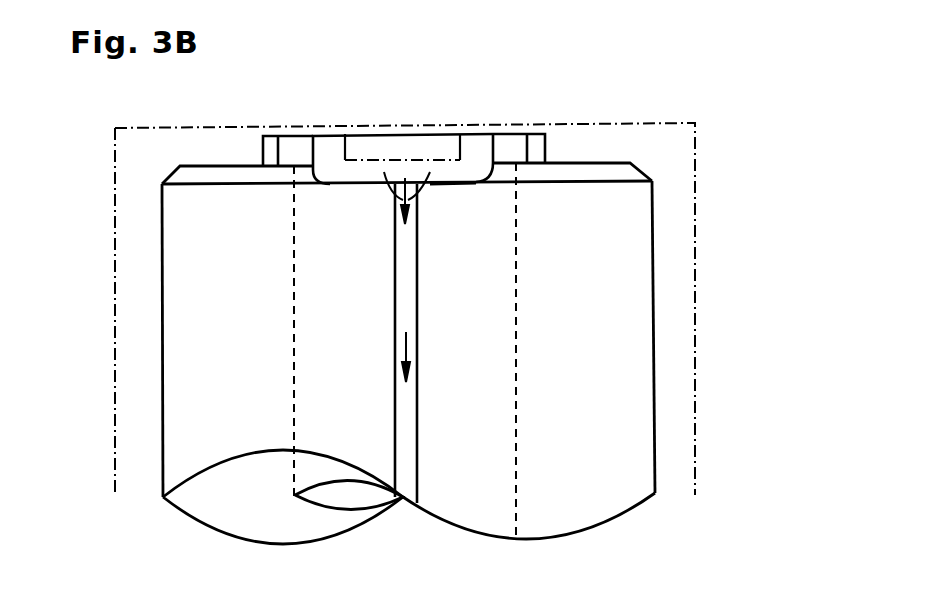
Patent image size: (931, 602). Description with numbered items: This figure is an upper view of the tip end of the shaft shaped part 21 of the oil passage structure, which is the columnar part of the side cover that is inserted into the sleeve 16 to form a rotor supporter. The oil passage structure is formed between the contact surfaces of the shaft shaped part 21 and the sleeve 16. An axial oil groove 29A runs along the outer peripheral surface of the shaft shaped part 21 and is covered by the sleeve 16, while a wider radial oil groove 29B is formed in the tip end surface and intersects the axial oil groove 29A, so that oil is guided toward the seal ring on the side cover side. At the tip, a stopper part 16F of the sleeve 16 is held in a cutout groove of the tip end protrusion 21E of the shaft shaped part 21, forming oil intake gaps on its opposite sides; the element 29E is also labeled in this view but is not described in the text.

The sleeve 16 is at (697, 247).
The stopper part 16F is at (343, 146).
The shaft shaped part 21 is at (161, 300).
The tip end protrusion 21E is at (263, 150).
The axial oil groove 29A is at (407, 268).
The radial oil groove 29B is at (452, 172).
The bracket / cover 29E is at (472, 153).